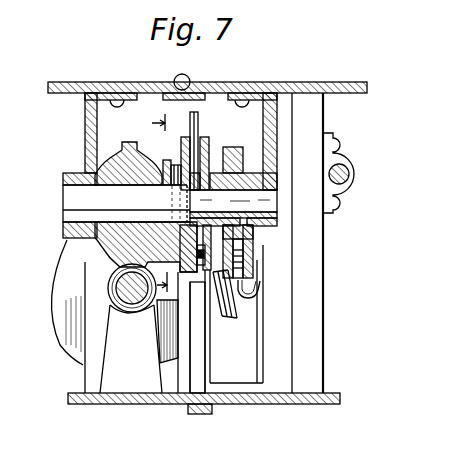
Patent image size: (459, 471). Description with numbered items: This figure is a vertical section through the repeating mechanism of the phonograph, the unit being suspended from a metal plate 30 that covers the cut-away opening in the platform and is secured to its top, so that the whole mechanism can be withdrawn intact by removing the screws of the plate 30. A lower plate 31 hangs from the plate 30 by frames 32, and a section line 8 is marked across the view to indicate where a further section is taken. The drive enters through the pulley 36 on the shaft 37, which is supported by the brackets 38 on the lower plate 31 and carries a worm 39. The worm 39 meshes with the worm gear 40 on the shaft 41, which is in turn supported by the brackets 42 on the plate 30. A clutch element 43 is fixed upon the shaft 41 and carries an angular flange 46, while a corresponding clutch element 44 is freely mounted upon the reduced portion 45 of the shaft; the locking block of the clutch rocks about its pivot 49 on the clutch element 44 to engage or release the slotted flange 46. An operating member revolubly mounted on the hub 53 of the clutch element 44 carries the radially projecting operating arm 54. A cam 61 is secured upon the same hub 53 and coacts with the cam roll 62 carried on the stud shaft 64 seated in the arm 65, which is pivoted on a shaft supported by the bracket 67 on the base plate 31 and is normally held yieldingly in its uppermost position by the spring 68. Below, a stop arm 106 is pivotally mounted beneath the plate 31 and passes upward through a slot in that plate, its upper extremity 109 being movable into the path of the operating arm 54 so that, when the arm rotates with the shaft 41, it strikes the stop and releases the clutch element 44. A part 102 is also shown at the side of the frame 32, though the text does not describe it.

The section line 8- 8 is at (157, 207).
The metal plate 30 is at (318, 81).
The lower plate 31 is at (115, 404).
The frames 32 is at (312, 328).
The pulley 36 is at (62, 266).
The shaft 37 is at (128, 284).
The brackets 38 is at (112, 365).
The worm 39 is at (128, 315).
The worm gear 40 is at (120, 152).
The shaft 41 is at (78, 193).
The brackets 42 is at (277, 120).
The clutch element 43 is at (181, 158).
The clutch element 44 is at (205, 142).
The reduced portion 45 is at (270, 204).
The angular flange 46 is at (194, 135).
The pivot 49 is at (195, 260).
The hub 53 is at (243, 172).
The operating arm 54 is at (203, 112).
The cam 61 is at (238, 153).
The cam roll 62 is at (253, 276).
The stud shaft 64 is at (248, 262).
The arm 65 is at (240, 318).
The bracket 67 is at (260, 355).
The spring 68 is at (258, 293).
The boss 102 is at (345, 173).
The stop arm 106 is at (197, 414).
The upper extremity 109 is at (205, 350).